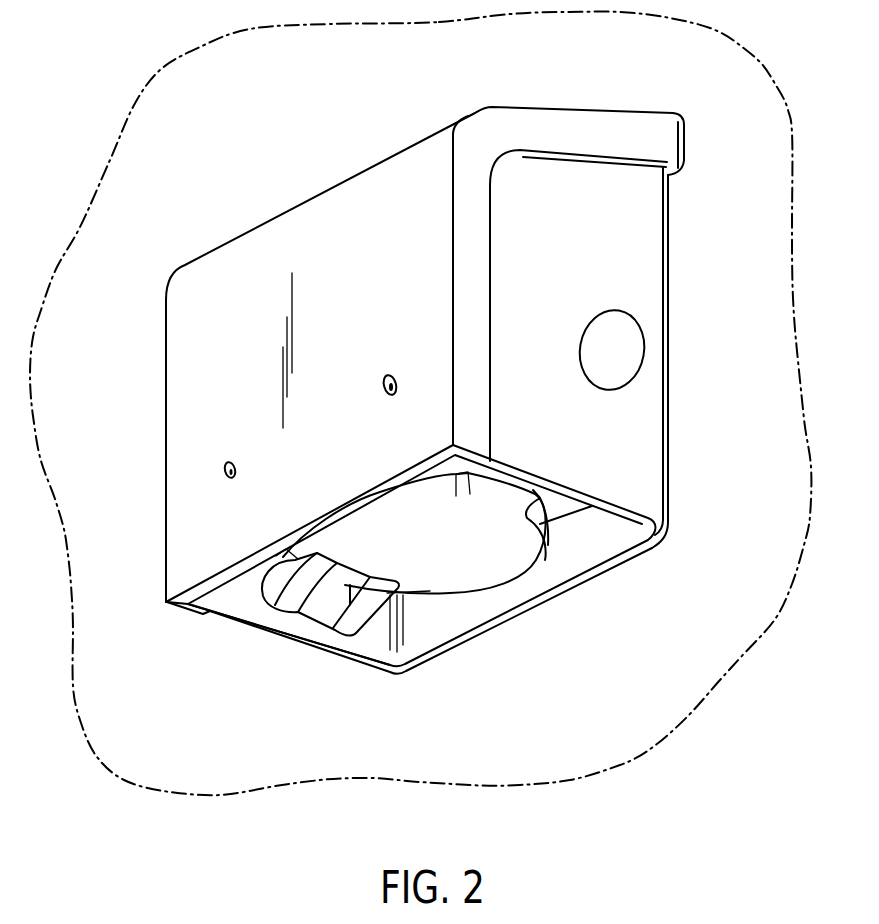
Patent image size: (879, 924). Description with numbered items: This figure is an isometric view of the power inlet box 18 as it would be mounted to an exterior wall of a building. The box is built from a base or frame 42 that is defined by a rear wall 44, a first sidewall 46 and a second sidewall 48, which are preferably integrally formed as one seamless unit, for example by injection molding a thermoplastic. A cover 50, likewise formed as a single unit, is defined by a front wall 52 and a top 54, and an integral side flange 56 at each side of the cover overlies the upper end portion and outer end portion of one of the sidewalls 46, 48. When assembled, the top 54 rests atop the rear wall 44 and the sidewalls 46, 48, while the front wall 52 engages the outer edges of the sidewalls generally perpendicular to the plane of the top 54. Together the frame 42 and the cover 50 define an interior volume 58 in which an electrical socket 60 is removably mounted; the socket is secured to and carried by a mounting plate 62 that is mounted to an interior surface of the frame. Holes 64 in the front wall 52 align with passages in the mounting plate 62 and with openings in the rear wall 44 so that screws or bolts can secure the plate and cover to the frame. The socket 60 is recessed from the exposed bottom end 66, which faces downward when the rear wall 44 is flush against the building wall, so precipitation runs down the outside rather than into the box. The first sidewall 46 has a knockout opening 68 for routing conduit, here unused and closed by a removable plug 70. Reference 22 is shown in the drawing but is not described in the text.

The power inlet box 18 is at (342, 138).
The vehicle body portion 22 is at (226, 126).
The frame 42 is at (720, 347).
The rear wall 44 is at (600, 540).
The first sidewall 46 is at (643, 446).
The second sidewall 48 is at (373, 648).
The cover 50 is at (183, 243).
The front wall 52 is at (193, 373).
The top 54 is at (570, 108).
The side flange 56 is at (487, 147).
The interior volume 58 is at (446, 689).
The electrical socket 60 is at (493, 603).
The mounting plate 62 is at (550, 500).
The holes 64 is at (388, 398).
The exposed bottom end 66 is at (217, 667).
The knockout opening 68 is at (590, 380).
The removable plug 70 is at (600, 363).